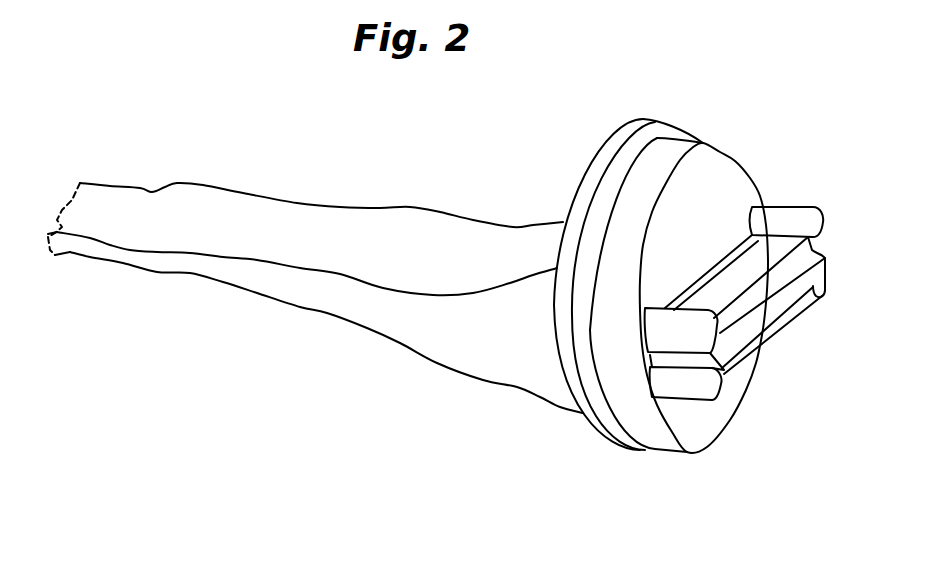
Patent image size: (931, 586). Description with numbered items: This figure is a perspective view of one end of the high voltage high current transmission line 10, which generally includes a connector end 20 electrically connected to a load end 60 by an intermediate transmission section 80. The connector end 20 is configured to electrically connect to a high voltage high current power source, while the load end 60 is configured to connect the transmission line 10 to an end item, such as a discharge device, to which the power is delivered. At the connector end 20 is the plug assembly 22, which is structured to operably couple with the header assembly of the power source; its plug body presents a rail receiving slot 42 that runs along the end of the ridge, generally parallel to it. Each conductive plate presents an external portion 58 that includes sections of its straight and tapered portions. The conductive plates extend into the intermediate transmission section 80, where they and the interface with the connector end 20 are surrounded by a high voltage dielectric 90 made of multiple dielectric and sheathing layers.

The high voltage high current transmission line 10 is at (503, 107).
The connector end 20 is at (675, 481).
The plug assembly 22 is at (703, 162).
The rail receiving slot 42 is at (777, 318).
The external portion 58 is at (752, 277).
The load end 60 is at (85, 158).
The intermediate transmission section 80 is at (367, 328).
The high voltage dielectric 90 is at (300, 220).